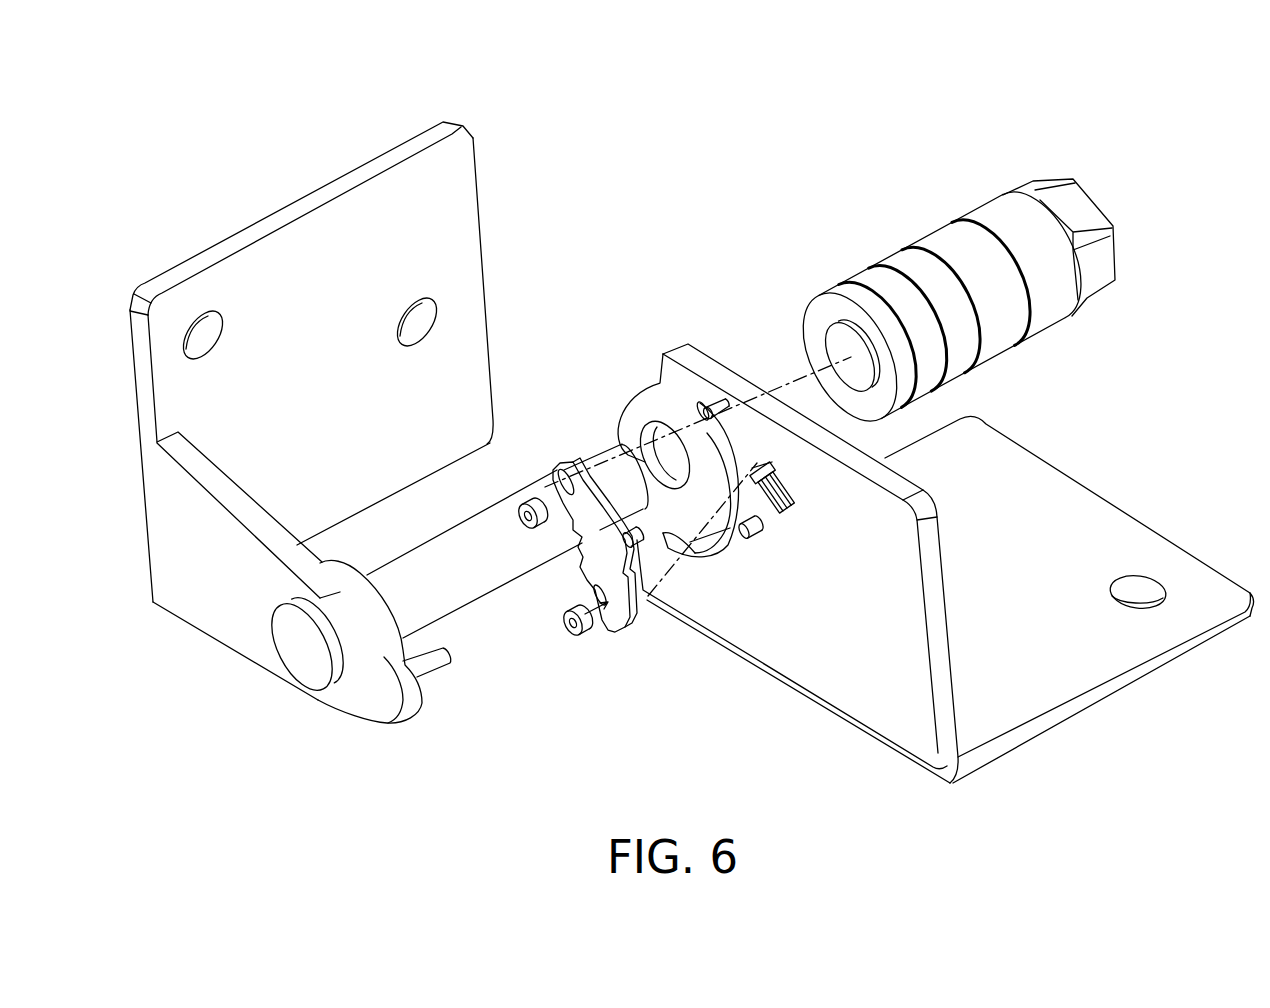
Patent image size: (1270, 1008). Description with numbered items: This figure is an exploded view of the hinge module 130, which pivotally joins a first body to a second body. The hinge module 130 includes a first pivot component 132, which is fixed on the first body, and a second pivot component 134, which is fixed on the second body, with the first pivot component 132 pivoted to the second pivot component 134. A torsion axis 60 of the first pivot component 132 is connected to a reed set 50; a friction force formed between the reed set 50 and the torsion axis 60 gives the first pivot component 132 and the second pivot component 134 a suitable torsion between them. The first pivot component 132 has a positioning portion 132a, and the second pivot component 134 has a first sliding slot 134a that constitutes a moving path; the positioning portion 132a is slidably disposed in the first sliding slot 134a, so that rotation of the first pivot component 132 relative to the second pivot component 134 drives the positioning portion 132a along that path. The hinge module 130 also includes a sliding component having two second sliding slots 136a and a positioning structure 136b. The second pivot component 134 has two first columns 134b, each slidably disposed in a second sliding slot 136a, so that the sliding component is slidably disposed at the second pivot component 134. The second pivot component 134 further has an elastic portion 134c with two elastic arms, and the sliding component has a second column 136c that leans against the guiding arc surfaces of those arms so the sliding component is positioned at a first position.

The hinge module 130 is at (1168, 155).
The reed set 50 is at (957, 243).
The first pivot component 132 is at (462, 208).
The positioning portion 132a is at (431, 664).
The torsion axis 60 is at (500, 522).
The second pivot component 134 is at (1073, 668).
The first sliding slot 134a is at (716, 439).
The first column 134b is at (758, 540).
The elastic portion 134c is at (796, 522).
The second sliding slot 136a is at (601, 628).
The positioning structure 136b is at (566, 568).
The second column 136c is at (638, 532).